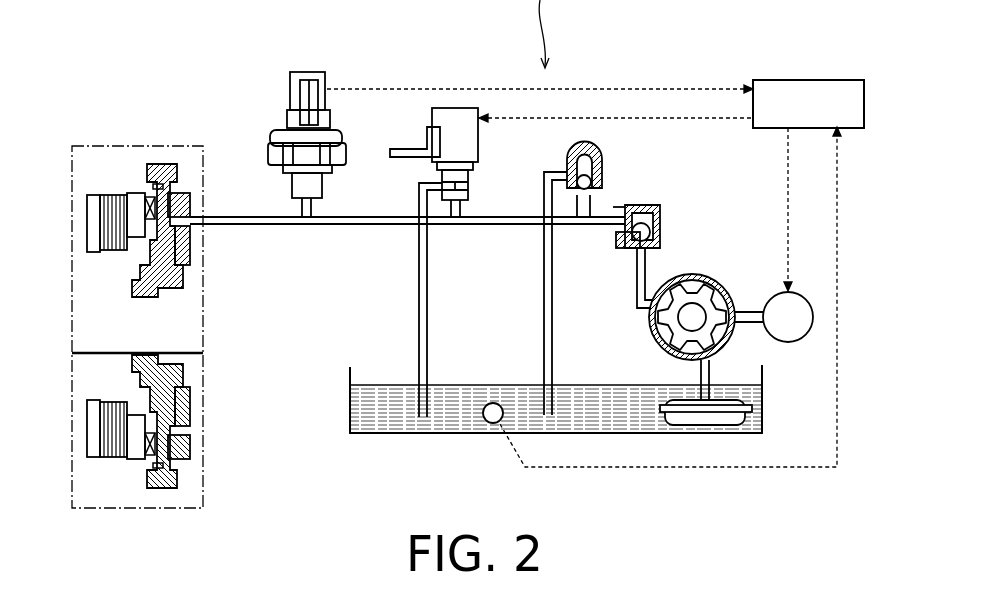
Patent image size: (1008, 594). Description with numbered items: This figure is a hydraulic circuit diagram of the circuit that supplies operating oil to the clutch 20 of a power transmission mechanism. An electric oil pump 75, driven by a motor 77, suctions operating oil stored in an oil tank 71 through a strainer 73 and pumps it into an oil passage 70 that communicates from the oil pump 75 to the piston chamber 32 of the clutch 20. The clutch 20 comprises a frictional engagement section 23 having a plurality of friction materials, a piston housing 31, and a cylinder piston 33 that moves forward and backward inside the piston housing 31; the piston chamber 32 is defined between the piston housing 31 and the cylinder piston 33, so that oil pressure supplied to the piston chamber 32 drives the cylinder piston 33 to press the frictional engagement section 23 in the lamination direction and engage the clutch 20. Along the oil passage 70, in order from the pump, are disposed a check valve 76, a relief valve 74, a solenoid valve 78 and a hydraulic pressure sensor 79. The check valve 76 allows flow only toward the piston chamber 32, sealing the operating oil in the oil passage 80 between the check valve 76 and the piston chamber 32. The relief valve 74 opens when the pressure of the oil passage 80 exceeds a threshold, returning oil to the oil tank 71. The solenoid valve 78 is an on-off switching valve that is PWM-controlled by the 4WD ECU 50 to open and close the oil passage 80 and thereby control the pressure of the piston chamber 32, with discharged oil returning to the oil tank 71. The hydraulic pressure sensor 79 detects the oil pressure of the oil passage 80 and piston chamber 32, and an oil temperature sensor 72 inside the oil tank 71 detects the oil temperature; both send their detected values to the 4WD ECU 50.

The clutch 20 is at (90, 144).
The frictional engagement section 23 is at (112, 252).
The piston housing 31 is at (165, 165).
The piston chamber 32 is at (186, 200).
The cylinder piston 33 is at (148, 195).
The 4WD ECU 50 is at (810, 80).
The oil passage 70 is at (525, 262).
The oil tank 71 is at (762, 413).
The oil temperature sensor 72 is at (488, 422).
The strainer 73 is at (740, 396).
The relief valve 74 is at (602, 156).
The electric oil pump 75 is at (690, 275).
The check valve 76 is at (655, 206).
The motor 77 is at (800, 294).
The solenoid valve 78 is at (460, 108).
The hydraulic pressure sensor 79 is at (312, 72).
The oil passage 80 is at (195, 237).